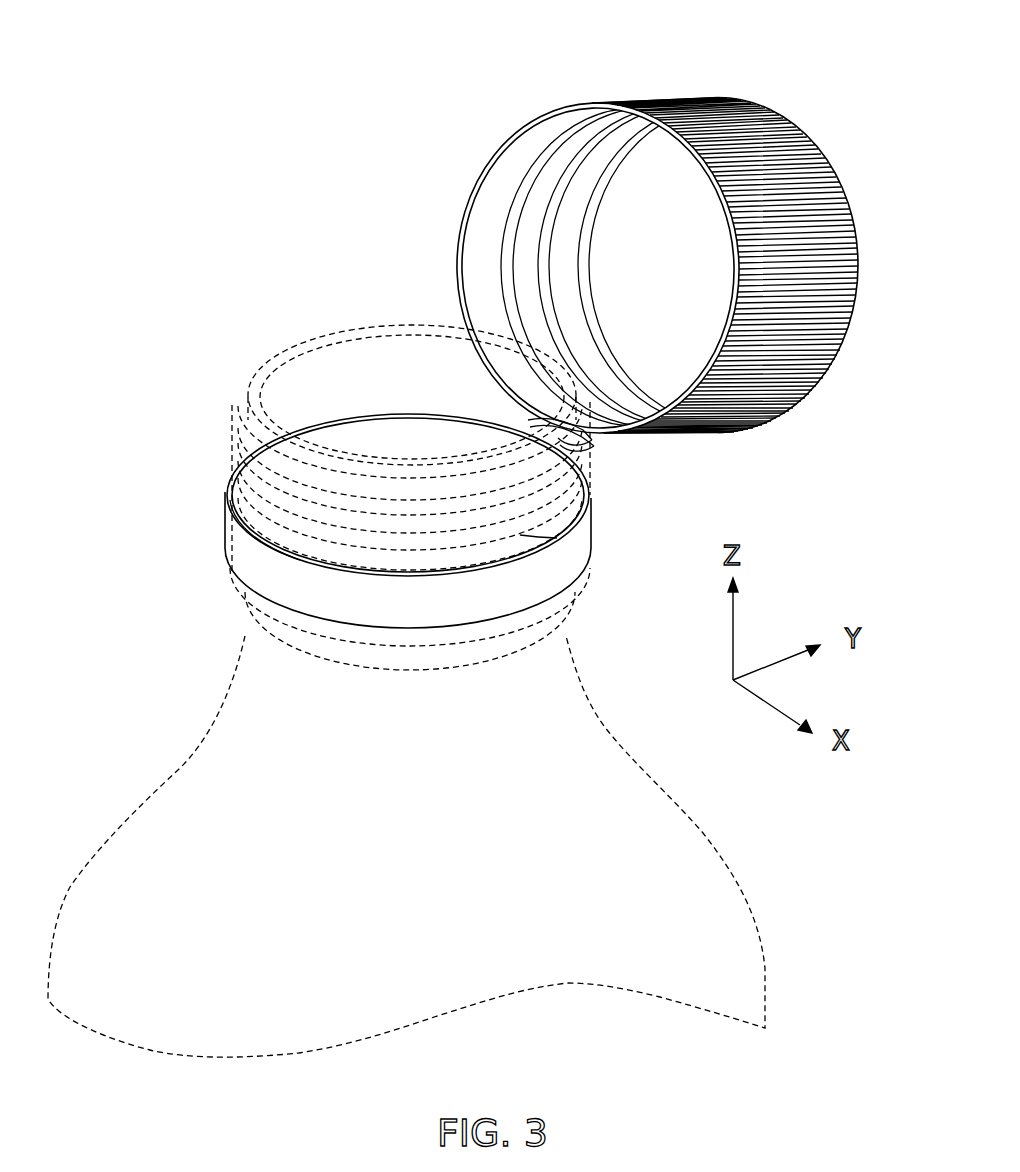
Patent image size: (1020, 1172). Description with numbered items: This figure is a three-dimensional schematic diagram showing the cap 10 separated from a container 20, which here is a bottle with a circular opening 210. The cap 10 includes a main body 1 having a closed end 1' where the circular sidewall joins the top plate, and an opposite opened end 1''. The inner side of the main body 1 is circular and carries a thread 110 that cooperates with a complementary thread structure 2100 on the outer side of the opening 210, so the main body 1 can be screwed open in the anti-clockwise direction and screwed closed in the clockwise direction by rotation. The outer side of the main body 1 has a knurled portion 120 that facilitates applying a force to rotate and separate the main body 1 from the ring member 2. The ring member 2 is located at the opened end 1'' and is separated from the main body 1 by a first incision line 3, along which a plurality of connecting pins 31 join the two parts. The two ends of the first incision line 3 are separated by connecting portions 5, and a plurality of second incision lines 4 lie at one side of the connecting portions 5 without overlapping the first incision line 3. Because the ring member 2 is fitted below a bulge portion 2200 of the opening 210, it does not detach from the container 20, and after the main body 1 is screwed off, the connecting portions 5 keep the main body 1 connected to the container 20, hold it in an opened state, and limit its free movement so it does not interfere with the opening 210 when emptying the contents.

The cap 10 is at (262, 110).
The main body 1 is at (644, 232).
The closed end 1' is at (604, 266).
The opened end 1'' is at (618, 265).
The thread 110 is at (556, 178).
The knurled portion 120 is at (800, 158).
The first incision line 3 is at (583, 518).
The connecting pins 31 is at (557, 538).
The second incision lines 4 is at (533, 413).
The connecting portions 5 is at (523, 424).
The container 20 is at (150, 772).
The ring member 2 is at (247, 564).
The opening 210 is at (252, 388).
The thread structure 2100 is at (237, 440).
The bulge portion 2200 is at (257, 541).